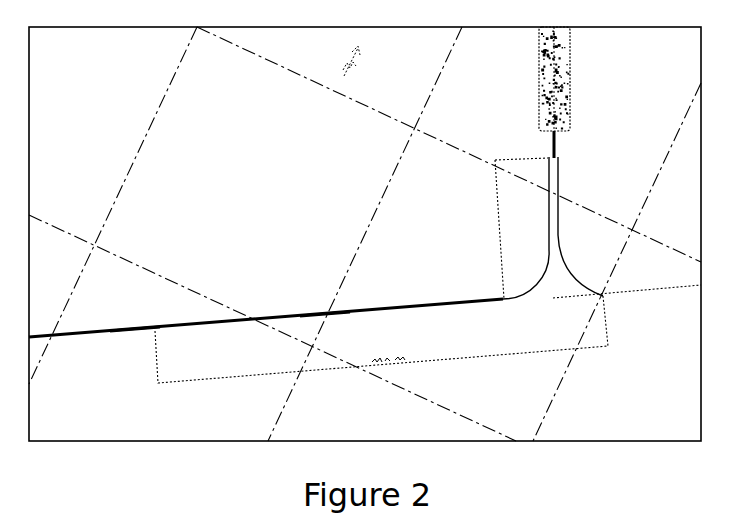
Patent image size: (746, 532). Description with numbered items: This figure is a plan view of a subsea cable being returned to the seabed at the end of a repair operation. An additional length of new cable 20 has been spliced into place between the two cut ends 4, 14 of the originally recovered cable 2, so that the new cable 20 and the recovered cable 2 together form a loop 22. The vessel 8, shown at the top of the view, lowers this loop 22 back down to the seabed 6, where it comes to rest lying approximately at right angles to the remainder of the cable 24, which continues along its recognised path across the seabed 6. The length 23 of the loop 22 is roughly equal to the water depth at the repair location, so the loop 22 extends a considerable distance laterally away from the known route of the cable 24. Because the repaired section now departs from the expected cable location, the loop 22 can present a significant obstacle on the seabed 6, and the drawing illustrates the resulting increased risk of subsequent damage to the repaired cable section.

The recovered cable 2 is at (558, 234).
The cut end 4 is at (555, 158).
The seabed 6 is at (227, 176).
The vessel 8 is at (564, 107).
The cut end 14 is at (327, 318).
The new cable 20 is at (423, 308).
The loop 22 is at (574, 190).
The length of the loop 23 is at (521, 228).
The remainder of the cable 24 is at (136, 330).